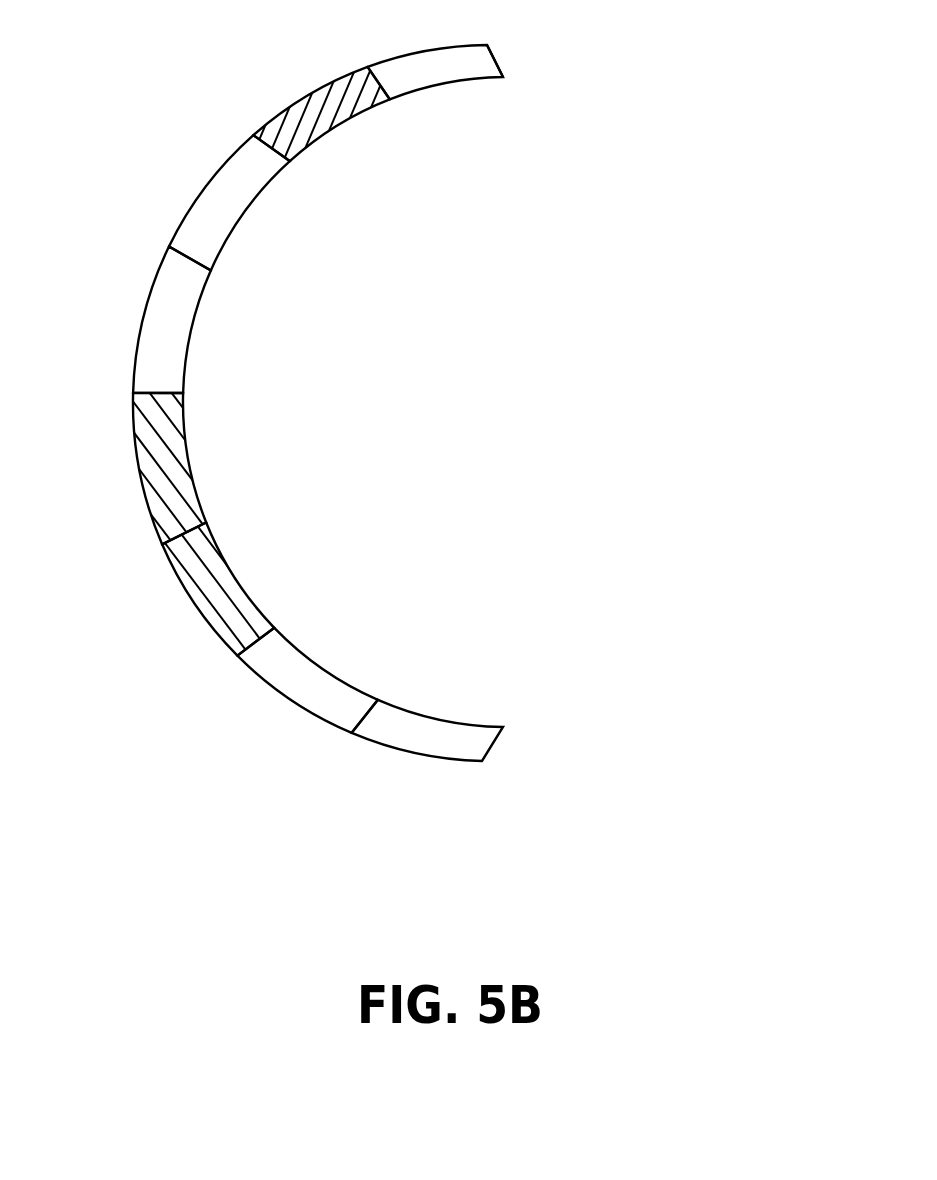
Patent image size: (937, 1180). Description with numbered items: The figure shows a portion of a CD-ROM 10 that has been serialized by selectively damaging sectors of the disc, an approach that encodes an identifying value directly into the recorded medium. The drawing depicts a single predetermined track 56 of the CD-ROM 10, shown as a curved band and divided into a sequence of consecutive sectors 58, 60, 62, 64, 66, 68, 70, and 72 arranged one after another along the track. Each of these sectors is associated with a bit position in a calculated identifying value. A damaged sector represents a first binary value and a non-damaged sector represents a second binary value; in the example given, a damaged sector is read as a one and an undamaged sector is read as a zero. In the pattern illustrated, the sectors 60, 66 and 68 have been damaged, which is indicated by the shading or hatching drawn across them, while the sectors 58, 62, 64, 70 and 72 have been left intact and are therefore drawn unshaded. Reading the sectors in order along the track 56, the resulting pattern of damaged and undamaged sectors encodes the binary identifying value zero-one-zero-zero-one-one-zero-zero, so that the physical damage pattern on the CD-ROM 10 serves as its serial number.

The CD-ROM 10 is at (133, 455).
The track 56 is at (488, 49).
The sector 58 is at (437, 70).
The sector 60 is at (313, 128).
The sector 62 is at (227, 215).
The sector 64 is at (182, 322).
The sector 66 is at (175, 475).
The sector 68 is at (237, 608).
The sector 70 is at (320, 682).
The sector 72 is at (453, 735).